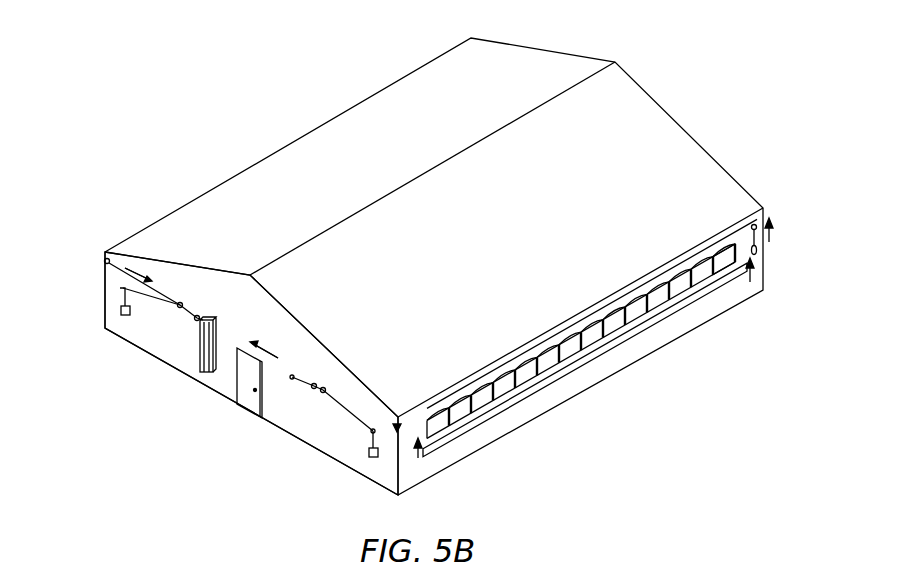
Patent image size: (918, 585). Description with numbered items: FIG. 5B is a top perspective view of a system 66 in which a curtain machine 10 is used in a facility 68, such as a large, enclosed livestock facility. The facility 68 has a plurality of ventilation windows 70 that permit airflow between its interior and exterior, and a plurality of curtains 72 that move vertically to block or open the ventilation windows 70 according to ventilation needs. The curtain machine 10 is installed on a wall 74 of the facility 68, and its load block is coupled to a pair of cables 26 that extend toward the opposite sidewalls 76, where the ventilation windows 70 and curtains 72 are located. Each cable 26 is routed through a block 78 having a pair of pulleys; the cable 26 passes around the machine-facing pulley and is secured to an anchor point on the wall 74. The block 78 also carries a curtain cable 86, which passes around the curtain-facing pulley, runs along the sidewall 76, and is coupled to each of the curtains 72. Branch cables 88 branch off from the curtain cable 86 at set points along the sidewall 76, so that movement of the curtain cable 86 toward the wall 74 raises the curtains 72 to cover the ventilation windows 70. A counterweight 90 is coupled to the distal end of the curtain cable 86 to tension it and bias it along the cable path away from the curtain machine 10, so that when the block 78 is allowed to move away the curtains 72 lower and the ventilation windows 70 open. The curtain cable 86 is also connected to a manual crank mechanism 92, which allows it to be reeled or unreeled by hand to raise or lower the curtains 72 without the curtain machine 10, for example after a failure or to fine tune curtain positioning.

The system 66 is at (157, 182).
The facility 68 is at (101, 302).
The wall 74 is at (302, 427).
The curtain machine 10 is at (216, 372).
The block 78 is at (182, 303).
The cable 26 is at (196, 316).
The manual crank mechanism 92 is at (133, 316).
The curtain cable 86 is at (452, 397).
The branch cables 88 is at (508, 378).
The curtains 72 is at (645, 325).
The ventilation windows 70 is at (727, 270).
The counterweight 90 is at (759, 251).
The sidewalls 76 is at (420, 483).